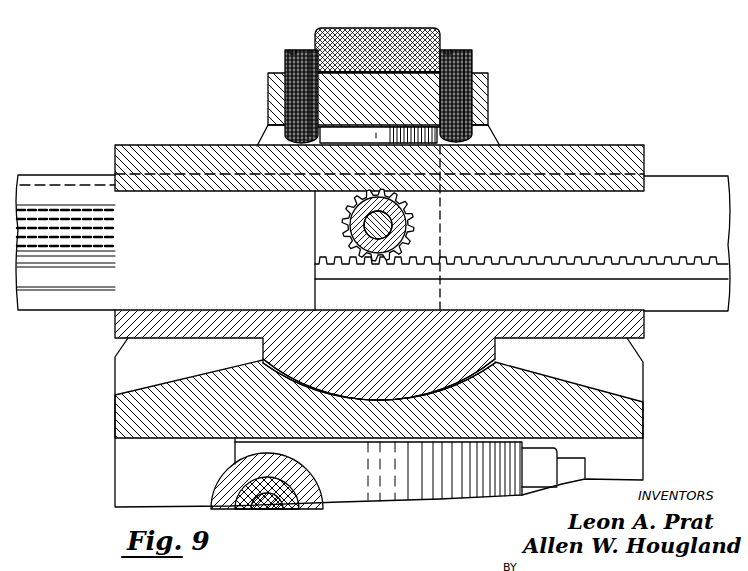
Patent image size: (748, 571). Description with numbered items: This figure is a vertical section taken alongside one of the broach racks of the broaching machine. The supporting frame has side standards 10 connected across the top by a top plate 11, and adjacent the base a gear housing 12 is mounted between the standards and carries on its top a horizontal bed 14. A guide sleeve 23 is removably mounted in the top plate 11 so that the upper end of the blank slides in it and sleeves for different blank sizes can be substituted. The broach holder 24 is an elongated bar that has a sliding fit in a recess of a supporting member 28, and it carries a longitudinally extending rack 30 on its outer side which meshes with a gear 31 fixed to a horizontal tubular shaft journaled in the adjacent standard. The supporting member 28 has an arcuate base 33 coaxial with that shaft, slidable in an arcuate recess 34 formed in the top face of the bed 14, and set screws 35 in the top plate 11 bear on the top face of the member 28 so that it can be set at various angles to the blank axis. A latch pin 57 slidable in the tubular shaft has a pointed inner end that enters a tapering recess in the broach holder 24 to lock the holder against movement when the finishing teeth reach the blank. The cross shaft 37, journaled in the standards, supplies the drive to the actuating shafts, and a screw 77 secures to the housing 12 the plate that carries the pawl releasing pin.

The side standards 10 is at (263, 136).
The top plate 11 is at (488, 88).
The gear housing 12 is at (400, 495).
The horizontal bed 14 is at (643, 407).
The guide sleeve 23 is at (432, 27).
The broach holders 24 is at (53, 183).
The supporting members 28 is at (587, 145).
The rack 30 is at (685, 275).
The gear 31 is at (410, 208).
The arcuate bases 33 is at (437, 396).
The arcuate recesses 34 is at (330, 389).
The set screws 35 is at (285, 62).
The cross shaft 37 is at (275, 513).
The latch pins 57 is at (350, 238).
The screw 77 is at (585, 467).